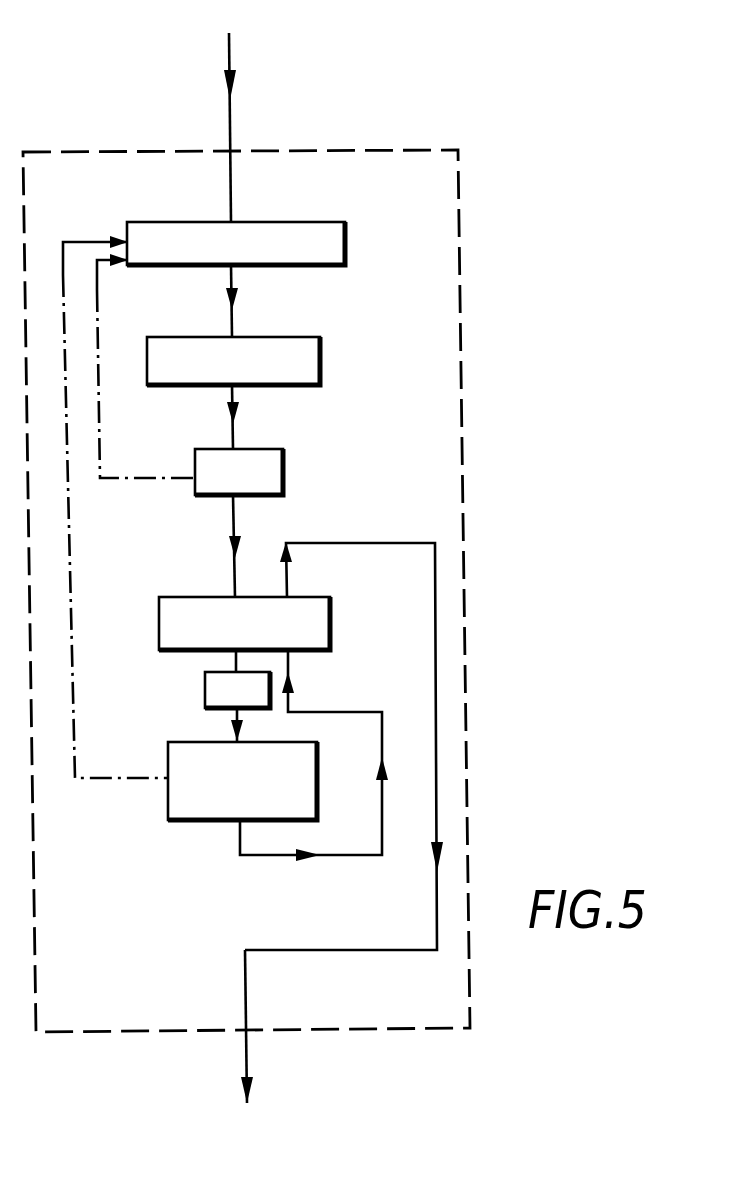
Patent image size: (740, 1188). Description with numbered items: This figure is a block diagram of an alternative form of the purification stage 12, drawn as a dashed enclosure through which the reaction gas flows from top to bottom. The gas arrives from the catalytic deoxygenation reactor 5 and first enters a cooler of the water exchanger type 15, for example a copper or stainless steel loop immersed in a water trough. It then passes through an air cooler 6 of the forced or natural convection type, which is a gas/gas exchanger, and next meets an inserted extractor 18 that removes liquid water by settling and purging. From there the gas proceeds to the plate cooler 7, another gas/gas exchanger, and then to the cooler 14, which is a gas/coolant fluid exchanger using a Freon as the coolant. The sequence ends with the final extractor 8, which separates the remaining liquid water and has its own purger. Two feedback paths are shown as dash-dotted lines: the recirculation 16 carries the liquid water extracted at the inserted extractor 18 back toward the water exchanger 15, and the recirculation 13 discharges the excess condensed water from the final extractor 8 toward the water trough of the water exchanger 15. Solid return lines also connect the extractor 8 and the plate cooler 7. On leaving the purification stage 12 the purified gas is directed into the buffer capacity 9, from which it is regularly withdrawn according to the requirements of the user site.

The catalytic deoxygenation reactor 5 is at (228, 111).
The air cooler 6 is at (320, 363).
The plate exchanger 7 is at (330, 622).
The final extractor 8 is at (317, 792).
The buffer capacity 9 is at (247, 1049).
The purification stage 12 is at (458, 217).
The recirculation 13 is at (68, 590).
The gas/coolant fluid exchanger 14 is at (205, 697).
The water exchanger 15 is at (143, 222).
The recirculation 16 is at (100, 463).
The inserted extractor 18 is at (283, 470).